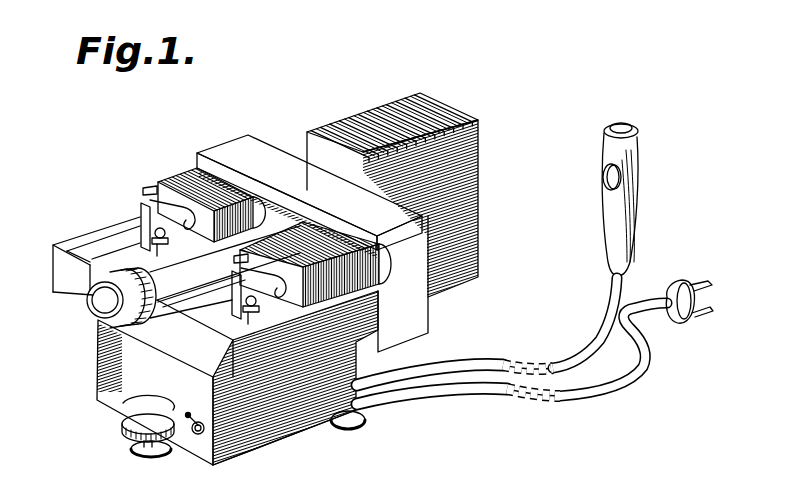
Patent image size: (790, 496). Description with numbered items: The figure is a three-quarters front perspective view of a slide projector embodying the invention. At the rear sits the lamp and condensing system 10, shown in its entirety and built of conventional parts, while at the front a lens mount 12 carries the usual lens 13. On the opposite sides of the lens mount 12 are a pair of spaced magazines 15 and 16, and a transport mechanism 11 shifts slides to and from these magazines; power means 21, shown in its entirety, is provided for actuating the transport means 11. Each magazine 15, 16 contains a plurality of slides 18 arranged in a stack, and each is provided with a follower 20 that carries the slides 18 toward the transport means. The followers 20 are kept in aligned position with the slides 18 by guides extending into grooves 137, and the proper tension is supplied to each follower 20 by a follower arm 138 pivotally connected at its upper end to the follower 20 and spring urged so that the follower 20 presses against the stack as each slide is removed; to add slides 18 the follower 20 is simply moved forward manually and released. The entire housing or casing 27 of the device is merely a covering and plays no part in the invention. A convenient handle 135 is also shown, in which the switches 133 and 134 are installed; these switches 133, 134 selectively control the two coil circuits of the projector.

The lamp and condensing system 10 is at (483, 182).
The transport mechanism 11 is at (270, 138).
The lens mount 12 is at (225, 272).
The lens 13 is at (108, 306).
The magazine 15 is at (74, 246).
The magazine 16 is at (196, 298).
The slides 18 is at (175, 182).
The follower 20 is at (150, 210).
The power means 21 is at (280, 449).
The housing or casing 27 is at (285, 162).
The switch 133 is at (603, 179).
The switch 134 is at (620, 126).
The handle 135 is at (626, 220).
The grooves 137 is at (102, 240).
The follower arm 138 is at (138, 228).